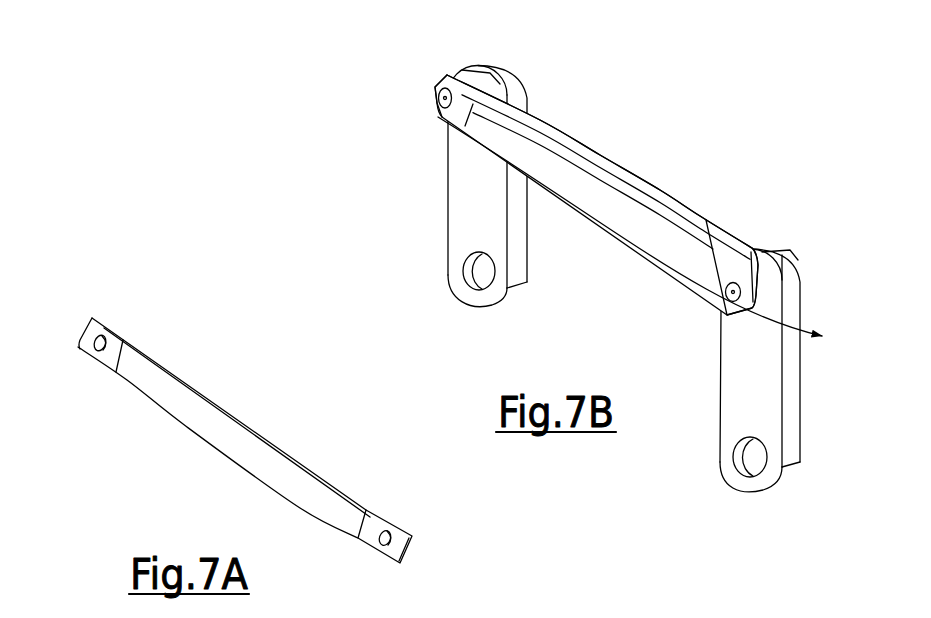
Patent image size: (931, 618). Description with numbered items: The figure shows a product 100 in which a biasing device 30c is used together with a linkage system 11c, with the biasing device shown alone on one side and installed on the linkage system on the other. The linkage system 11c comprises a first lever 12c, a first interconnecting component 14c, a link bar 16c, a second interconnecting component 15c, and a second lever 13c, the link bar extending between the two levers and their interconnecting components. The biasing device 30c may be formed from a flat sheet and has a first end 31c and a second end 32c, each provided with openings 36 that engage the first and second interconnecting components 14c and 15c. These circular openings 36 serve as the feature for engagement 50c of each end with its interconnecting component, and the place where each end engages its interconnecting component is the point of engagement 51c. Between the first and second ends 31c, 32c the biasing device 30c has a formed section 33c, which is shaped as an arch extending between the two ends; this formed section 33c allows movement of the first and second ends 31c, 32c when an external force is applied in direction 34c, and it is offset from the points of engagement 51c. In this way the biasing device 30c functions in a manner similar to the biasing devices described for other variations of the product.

In FIG. 7A, the product 100 is at (244, 323).
In FIG. 7B, the product 100 is at (790, 136).
In FIG. 7B, the linkage system 11c is at (571, 120).
In FIG. 7B, the first lever 12c is at (446, 210).
In FIG. 7B, the second lever 13c is at (719, 372).
In FIG. 7B, the first interconnecting component 14c is at (433, 101).
In FIG. 7B, the second interconnecting component 15c is at (723, 281).
In FIG. 7B, the link bar 16c is at (595, 146).
In FIG. 7A, the biasing device 30c is at (197, 434).
In FIG. 7B, the biasing device 30c is at (613, 233).
In FIG. 7A, the first end 31c is at (82, 320).
In FIG. 7A, the second end 32c is at (409, 552).
In FIG. 7A, the formed section 33c is at (234, 418).
In FIG. 7B, the direction 34c is at (649, 237).
In FIG. 7A, the openings 36 is at (92, 347).
In FIG. 7A, the feature for engagement 50c is at (104, 337).
In FIG. 7B, the point of engagement 51c is at (443, 89).